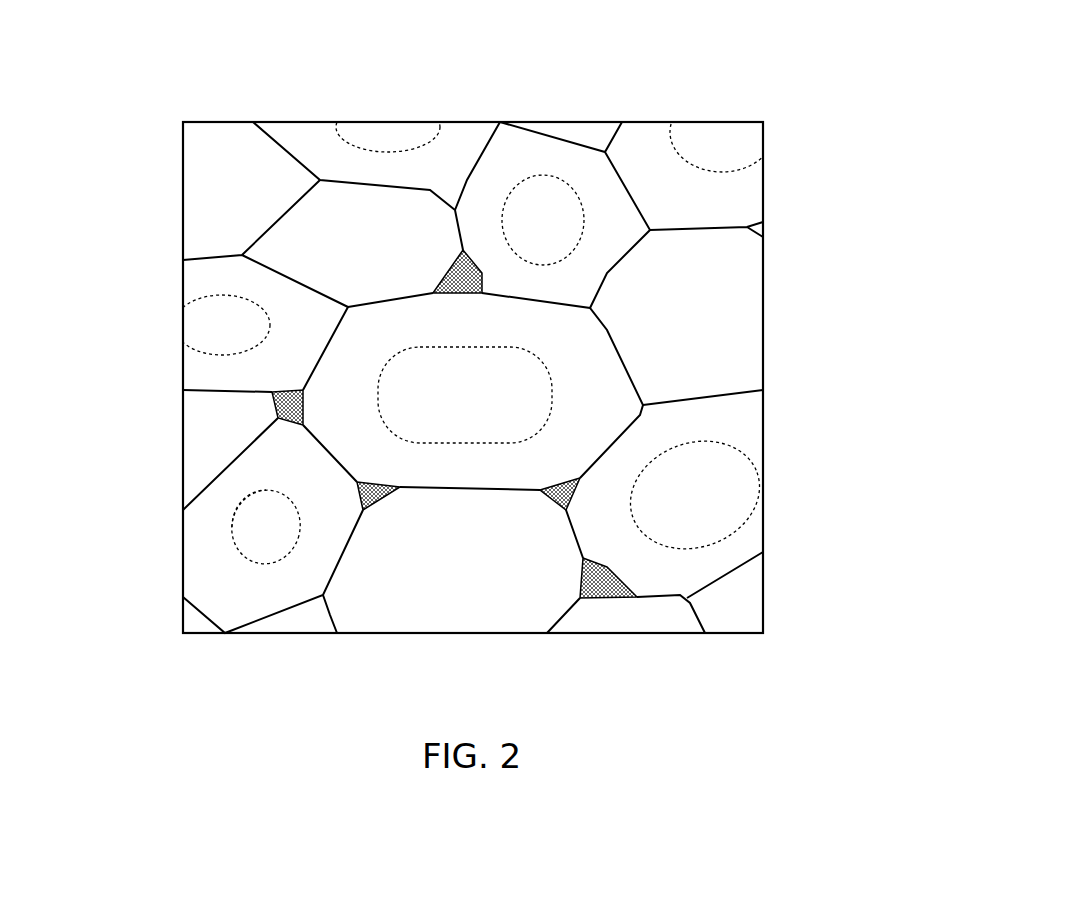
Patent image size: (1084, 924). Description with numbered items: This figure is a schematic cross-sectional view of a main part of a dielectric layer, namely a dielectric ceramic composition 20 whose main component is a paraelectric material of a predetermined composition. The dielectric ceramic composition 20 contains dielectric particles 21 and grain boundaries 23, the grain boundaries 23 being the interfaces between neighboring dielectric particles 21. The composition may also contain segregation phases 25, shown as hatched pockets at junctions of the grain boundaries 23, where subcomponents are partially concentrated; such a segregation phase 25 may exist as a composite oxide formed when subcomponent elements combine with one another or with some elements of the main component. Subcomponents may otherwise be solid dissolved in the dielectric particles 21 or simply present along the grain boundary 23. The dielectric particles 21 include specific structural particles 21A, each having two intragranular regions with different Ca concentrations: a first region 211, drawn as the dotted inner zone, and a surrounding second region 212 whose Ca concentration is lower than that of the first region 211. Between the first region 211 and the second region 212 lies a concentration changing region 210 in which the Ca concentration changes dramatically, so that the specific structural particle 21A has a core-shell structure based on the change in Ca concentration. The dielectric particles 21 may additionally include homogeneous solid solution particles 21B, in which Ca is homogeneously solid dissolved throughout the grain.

The dielectric ceramic composition 20 is at (703, 70).
The dielectric particles 21 is at (903, 263).
The specific structural particle 21A is at (593, 372).
The homogeneous solid solution particle 21B is at (707, 283).
The grain boundary 23 is at (263, 228).
The segregation phase 25 is at (603, 587).
The concentration changing region 210 is at (267, 542).
The first region 211 is at (215, 527).
The second region 212 is at (267, 563).